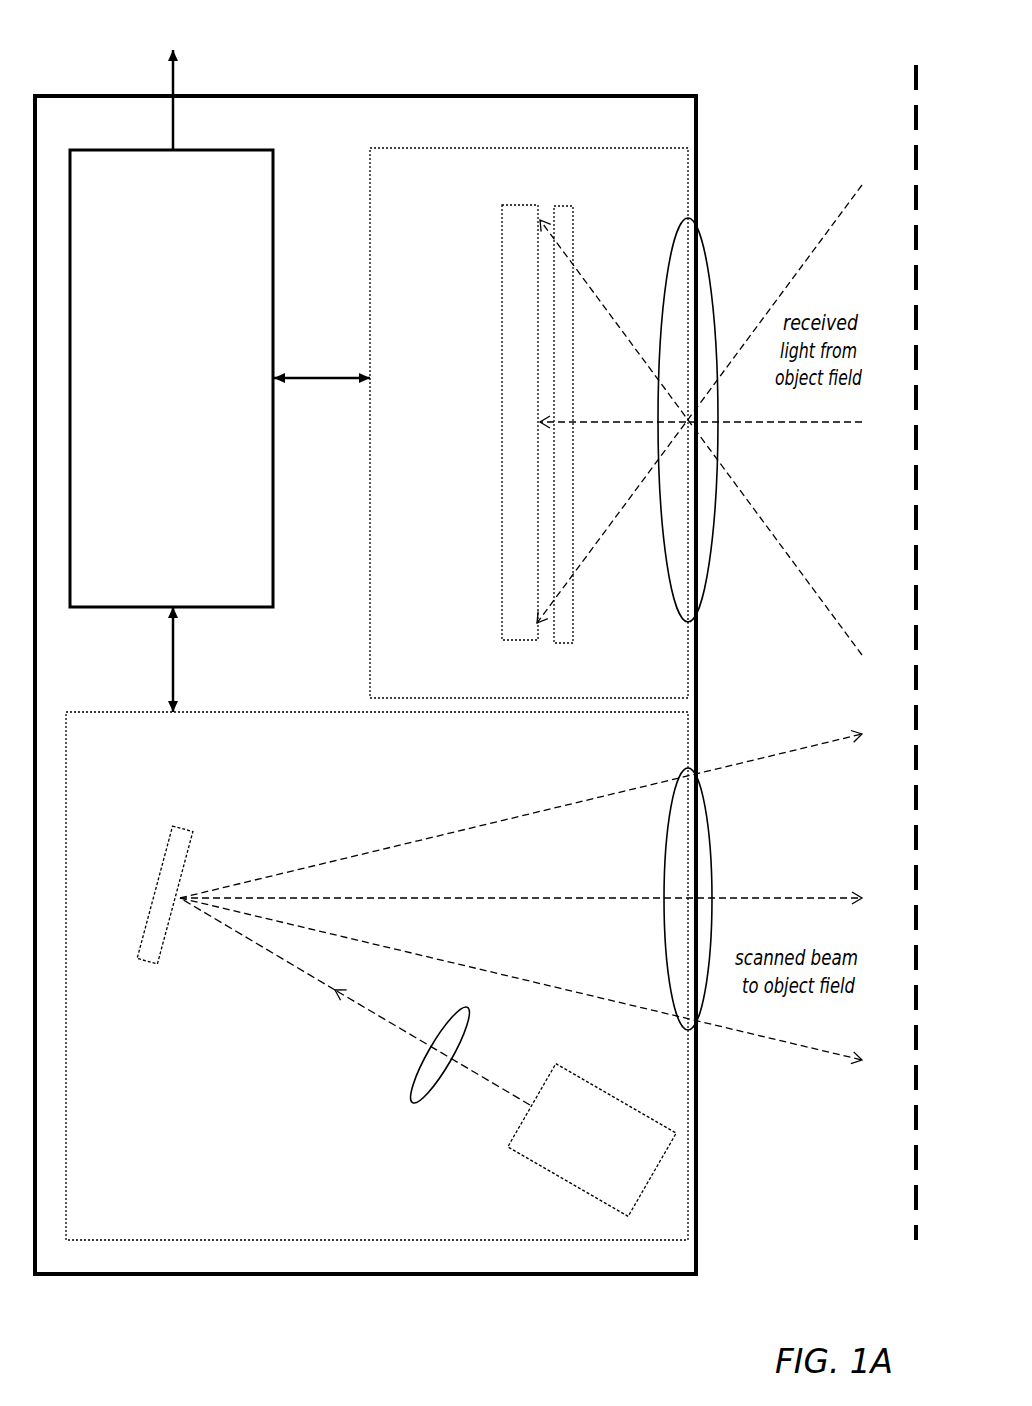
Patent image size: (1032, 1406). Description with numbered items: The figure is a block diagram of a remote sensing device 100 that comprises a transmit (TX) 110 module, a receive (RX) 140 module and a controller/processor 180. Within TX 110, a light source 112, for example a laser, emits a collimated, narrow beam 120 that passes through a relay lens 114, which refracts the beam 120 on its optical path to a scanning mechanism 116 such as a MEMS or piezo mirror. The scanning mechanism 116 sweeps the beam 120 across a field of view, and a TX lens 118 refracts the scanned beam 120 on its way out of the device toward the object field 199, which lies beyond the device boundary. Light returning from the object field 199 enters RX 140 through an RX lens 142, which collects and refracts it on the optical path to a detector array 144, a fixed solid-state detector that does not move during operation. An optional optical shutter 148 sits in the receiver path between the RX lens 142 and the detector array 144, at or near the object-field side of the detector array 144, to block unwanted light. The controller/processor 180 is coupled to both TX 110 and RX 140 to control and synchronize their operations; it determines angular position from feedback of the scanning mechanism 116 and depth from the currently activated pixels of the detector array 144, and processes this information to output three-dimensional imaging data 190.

The remote sensing device 100 is at (688, 131).
The transmit (TX) component 110 is at (135, 1231).
The light source 112 is at (539, 1170).
The relay lens 114 is at (411, 1104).
The scanning mechanism 116 is at (158, 866).
The TX lens 118 is at (714, 865).
The beam 120 is at (357, 1001).
The receive (RX) component 140 is at (442, 694).
The RX lens 142 is at (715, 281).
The detector array 144 is at (498, 421).
The optical shutter 148 is at (608, 203).
The controller/processor 180 is at (188, 402).
The 3D imaging data 190 is at (172, 75).
The object field 199 is at (870, 621).